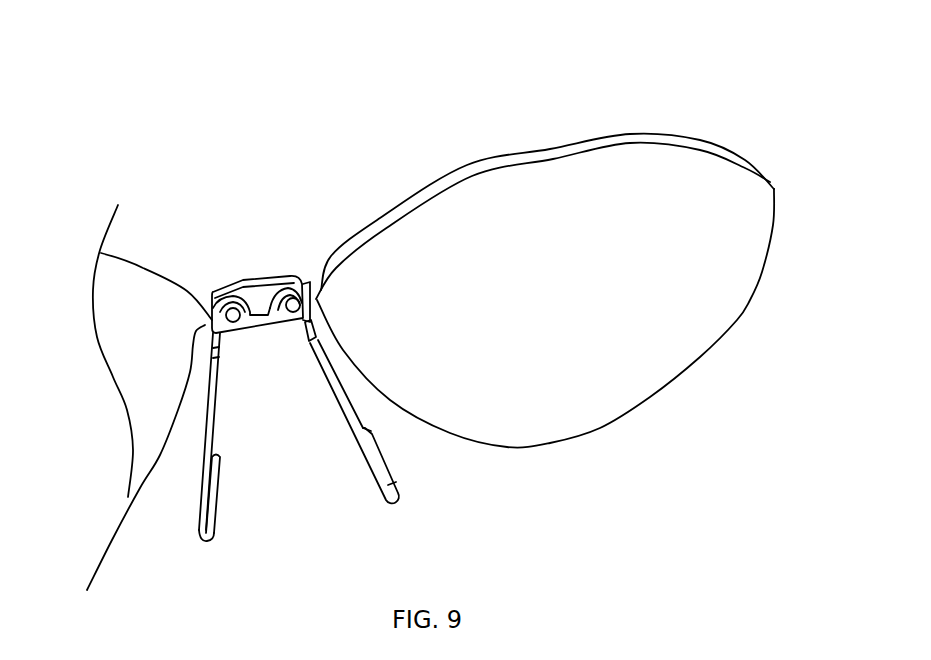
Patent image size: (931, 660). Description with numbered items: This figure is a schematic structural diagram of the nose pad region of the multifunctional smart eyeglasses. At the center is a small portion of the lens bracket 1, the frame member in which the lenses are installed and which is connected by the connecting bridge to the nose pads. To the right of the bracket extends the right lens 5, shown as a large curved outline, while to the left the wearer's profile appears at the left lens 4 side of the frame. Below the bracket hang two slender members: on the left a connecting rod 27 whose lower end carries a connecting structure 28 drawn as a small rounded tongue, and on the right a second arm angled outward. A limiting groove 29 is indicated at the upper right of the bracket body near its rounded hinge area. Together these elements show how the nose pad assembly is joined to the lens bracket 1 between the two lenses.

The lens bracket 1 is at (258, 277).
The left lens 4 is at (145, 350).
The right lens 5 is at (488, 217).
The connecting rod 27 is at (212, 412).
The connecting structure 28 is at (208, 513).
The limiting groove 29 is at (294, 278).